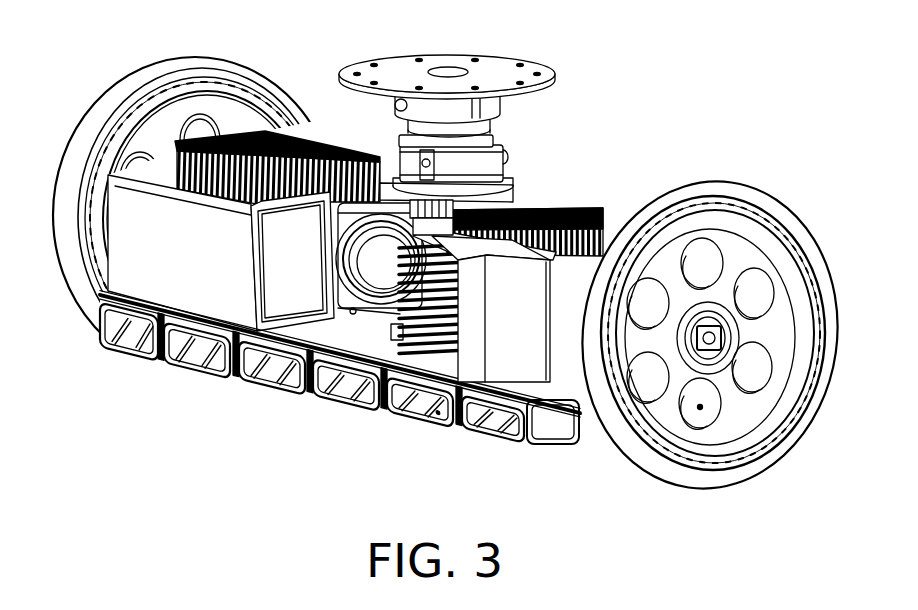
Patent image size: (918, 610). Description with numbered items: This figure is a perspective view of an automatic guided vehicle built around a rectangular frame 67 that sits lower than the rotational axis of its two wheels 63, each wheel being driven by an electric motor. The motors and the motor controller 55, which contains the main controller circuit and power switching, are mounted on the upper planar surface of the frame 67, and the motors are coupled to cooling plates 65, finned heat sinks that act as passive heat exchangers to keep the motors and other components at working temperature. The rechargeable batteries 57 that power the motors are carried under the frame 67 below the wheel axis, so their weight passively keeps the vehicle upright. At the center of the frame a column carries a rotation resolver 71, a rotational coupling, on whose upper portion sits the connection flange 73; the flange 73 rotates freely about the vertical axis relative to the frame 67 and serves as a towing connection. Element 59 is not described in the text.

The motor controller 55 is at (470, 353).
The batteries 57 is at (221, 349).
The battery housing 59 is at (153, 283).
The wheels 63 is at (800, 218).
The cooling plate 65 is at (341, 147).
The frame 67 is at (355, 344).
The rotation resolver 71 is at (508, 190).
The connection flange 73 is at (497, 64).